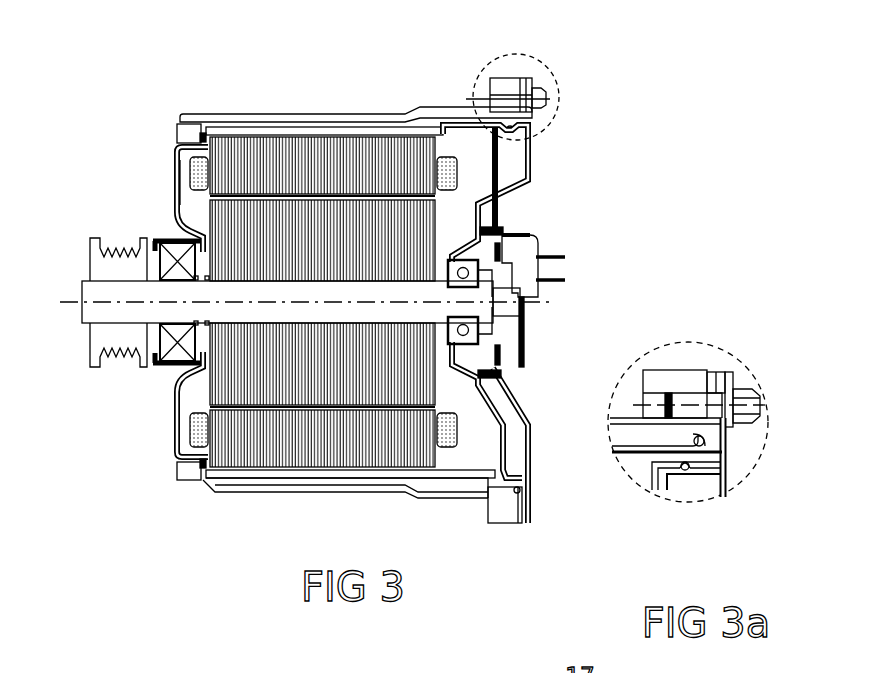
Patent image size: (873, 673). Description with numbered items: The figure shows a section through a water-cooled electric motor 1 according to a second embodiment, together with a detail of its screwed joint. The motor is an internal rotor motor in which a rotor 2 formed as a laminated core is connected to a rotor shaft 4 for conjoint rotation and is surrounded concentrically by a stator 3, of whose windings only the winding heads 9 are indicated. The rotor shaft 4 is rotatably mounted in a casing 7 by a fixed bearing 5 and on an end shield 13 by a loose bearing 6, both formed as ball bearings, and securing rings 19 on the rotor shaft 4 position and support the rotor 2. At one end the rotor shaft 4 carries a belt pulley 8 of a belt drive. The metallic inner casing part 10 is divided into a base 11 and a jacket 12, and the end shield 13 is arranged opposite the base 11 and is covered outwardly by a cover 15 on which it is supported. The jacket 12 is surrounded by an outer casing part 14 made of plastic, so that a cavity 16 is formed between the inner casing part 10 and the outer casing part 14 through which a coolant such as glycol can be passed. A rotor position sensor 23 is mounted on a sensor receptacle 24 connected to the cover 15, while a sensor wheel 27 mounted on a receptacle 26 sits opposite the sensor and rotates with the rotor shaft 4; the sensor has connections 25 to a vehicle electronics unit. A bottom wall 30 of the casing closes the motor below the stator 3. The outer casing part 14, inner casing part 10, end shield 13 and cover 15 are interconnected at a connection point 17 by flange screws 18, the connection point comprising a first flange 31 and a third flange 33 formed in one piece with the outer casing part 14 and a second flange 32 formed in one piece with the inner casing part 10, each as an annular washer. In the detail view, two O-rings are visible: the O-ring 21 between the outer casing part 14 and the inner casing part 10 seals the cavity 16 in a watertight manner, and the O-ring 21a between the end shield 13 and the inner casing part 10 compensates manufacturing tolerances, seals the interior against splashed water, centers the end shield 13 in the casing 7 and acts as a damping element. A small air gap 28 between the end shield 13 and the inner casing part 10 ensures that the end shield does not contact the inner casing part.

In FIG. 3, the electric motor 1 is at (84, 212).
In FIG. 3, the rotor 2 is at (486, 206).
In FIG. 3, the stator 3 is at (405, 148).
In FIG. 3, the rotor shaft 4 is at (86, 292).
In FIG. 3, the fixed bearing 5 is at (176, 357).
In FIG. 3, the loose bearing 6 is at (479, 278).
In FIG. 3, the casing 7 is at (172, 481).
In FIG. 3, the belt pulley 8 is at (98, 340).
In FIG. 3, the winding heads 9 is at (447, 170).
In FIG. 3, the inner casing part 10 is at (178, 158).
In FIG. 3A, the inner casing part 10 is at (627, 456).
In FIG. 3, the base 11 is at (176, 196).
In FIG. 3, the jacket 12 is at (340, 138).
In FIG. 3A, the jacket 12 is at (640, 466).
In FIG. 3, the end shield 13 is at (500, 165).
In FIG. 3A, the end shield 13 is at (660, 492).
In FIG. 3, the outer casing part 14 is at (270, 116).
In FIG. 3A, the outer casing part 14 is at (628, 405).
In FIG. 3, the cover 15 is at (533, 158).
In FIG. 3A, the cover 15 is at (713, 440).
In FIG. 3, the cavity 16 is at (300, 482).
In FIG. 3, the connection point 17 is at (514, 64).
In FIG. 3A, the connection point 17 is at (737, 360).
In FIG. 3, the flange screws 18 is at (556, 97).
In FIG. 3A, the flange screws 18 is at (750, 396).
In FIG. 3, the securing rings 19 is at (208, 323).
In FIG. 3, the O-ring 21 is at (200, 131).
In FIG. 3A, the O-ring 21 is at (722, 456).
In FIG. 3, the O-ring 21a is at (495, 484).
In FIG. 3A, the O-ring 21a is at (690, 470).
In FIG. 3, the rotor position sensor 23 is at (531, 247).
In FIG. 3, the sensor receptacle 24 is at (501, 354).
In FIG. 3, the terminals 25 is at (562, 272).
In FIG. 3, the receptacle 26 is at (522, 288).
In FIG. 3, the sensor wheel 27 is at (522, 370).
In FIG. 3A, the air gap 28 is at (728, 487).
In FIG. 3, the base plate 30 is at (356, 492).
In FIG. 3A, the first flange 31 is at (672, 386).
In FIG. 3A, the second flange 32 is at (713, 380).
In FIG. 3A, the third flange 33 is at (722, 375).